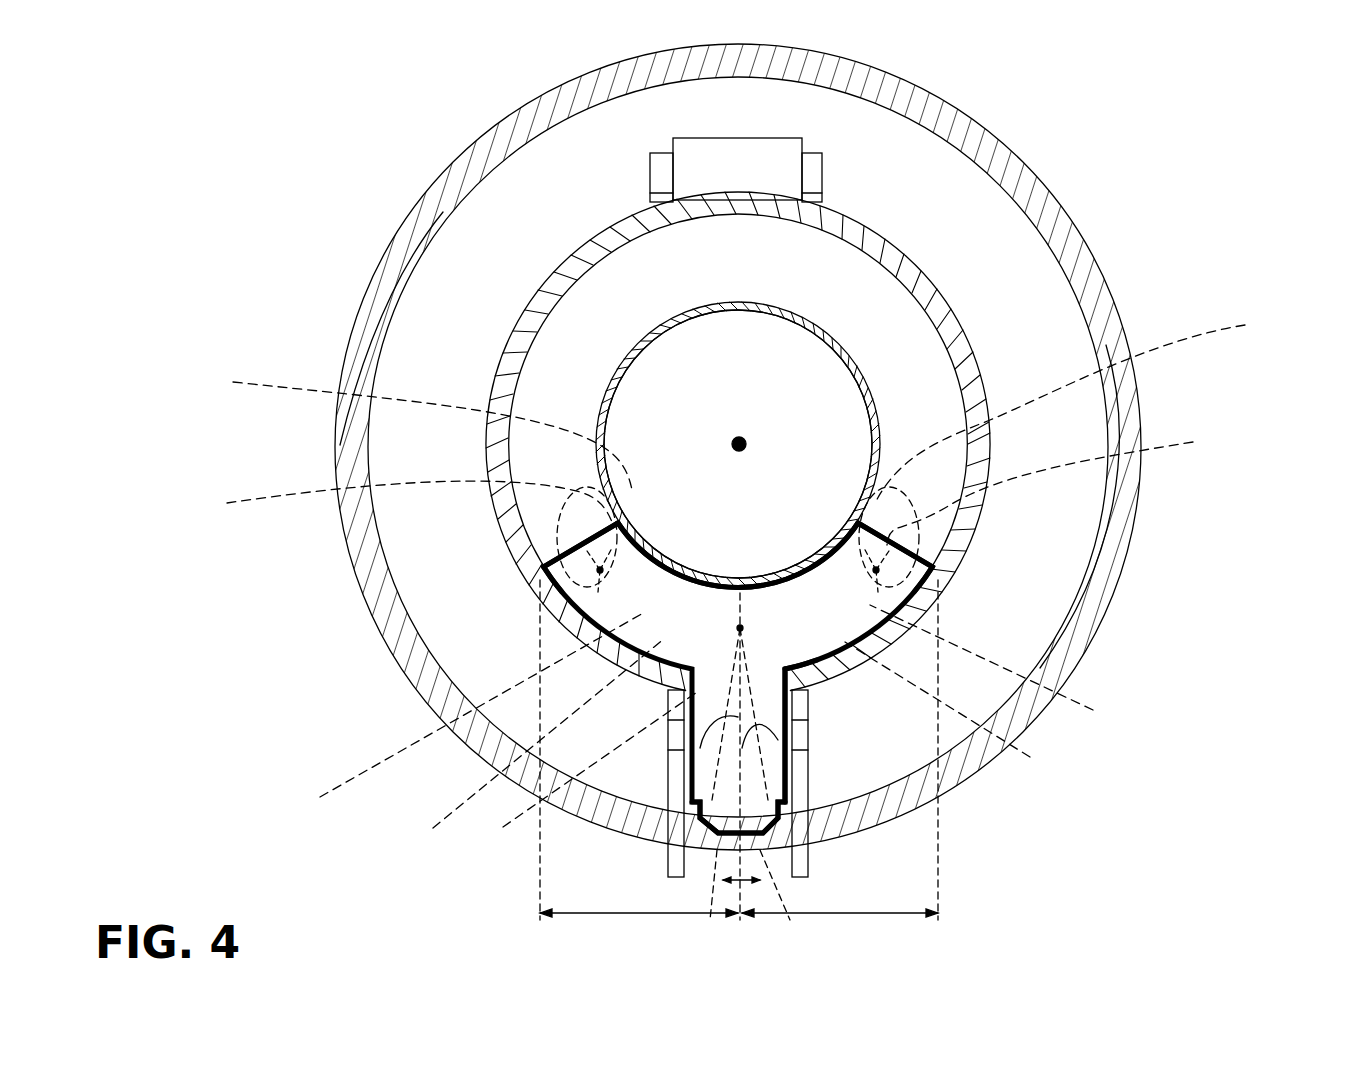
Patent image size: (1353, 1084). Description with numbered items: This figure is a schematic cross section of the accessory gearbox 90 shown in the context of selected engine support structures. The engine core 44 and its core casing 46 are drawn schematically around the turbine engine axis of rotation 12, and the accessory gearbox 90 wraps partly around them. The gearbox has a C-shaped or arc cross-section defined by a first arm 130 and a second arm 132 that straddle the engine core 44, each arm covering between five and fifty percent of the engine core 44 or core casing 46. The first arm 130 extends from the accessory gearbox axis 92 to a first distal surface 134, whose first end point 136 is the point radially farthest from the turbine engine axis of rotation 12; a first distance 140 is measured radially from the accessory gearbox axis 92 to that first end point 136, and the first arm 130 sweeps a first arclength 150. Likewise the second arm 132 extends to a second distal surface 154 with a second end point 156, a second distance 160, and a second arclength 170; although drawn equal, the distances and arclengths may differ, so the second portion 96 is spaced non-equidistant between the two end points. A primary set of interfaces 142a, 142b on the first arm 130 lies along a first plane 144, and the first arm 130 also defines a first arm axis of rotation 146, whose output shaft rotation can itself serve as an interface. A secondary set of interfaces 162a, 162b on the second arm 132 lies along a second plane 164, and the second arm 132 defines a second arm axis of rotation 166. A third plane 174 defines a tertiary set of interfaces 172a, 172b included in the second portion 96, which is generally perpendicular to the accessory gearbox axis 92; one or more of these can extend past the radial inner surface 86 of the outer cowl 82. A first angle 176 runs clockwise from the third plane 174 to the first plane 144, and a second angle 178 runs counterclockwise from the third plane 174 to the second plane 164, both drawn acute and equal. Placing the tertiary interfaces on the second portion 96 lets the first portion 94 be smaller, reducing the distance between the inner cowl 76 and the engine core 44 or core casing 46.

The turbine engine axis of rotation 12 is at (739, 444).
The engine core 44 is at (842, 388).
The core casing 46 is at (880, 407).
The inner cowl 76 is at (997, 468).
The outer cowl 82 is at (1118, 590).
The radial inner surface 86 is at (448, 222).
The accessory gearbox 90 is at (803, 683).
The accessory gearbox axis 92 is at (788, 677).
The first portion 94 is at (832, 674).
The second portion 96 is at (683, 750).
The first arm 130 is at (885, 612).
The second arm 132 is at (693, 582).
The first distal surface 134 is at (917, 547).
The first end point 136 is at (940, 567).
The first distance 140 is at (830, 913).
The primary interface 142a is at (1067, 486).
The primary interface 142b is at (1090, 408).
The first plane 144 is at (1007, 666).
The first arm axis of rotation 146 is at (873, 573).
The first arclength 150 is at (961, 708).
The second distal surface 154 is at (553, 530).
The second end point 156 is at (600, 570).
The second distance 160 is at (660, 913).
The secondary interface 162a is at (387, 501).
The secondary interface 162b is at (405, 429).
The second plane 164 is at (461, 715).
The second arm axis of rotation 166 is at (543, 566).
The second arclength 170 is at (529, 745).
The tertiary interface 172a is at (762, 882).
The tertiary interface 172b is at (726, 888).
The third plane 174 is at (581, 771).
The first angle 176 is at (807, 747).
The second angle 178 is at (727, 723).